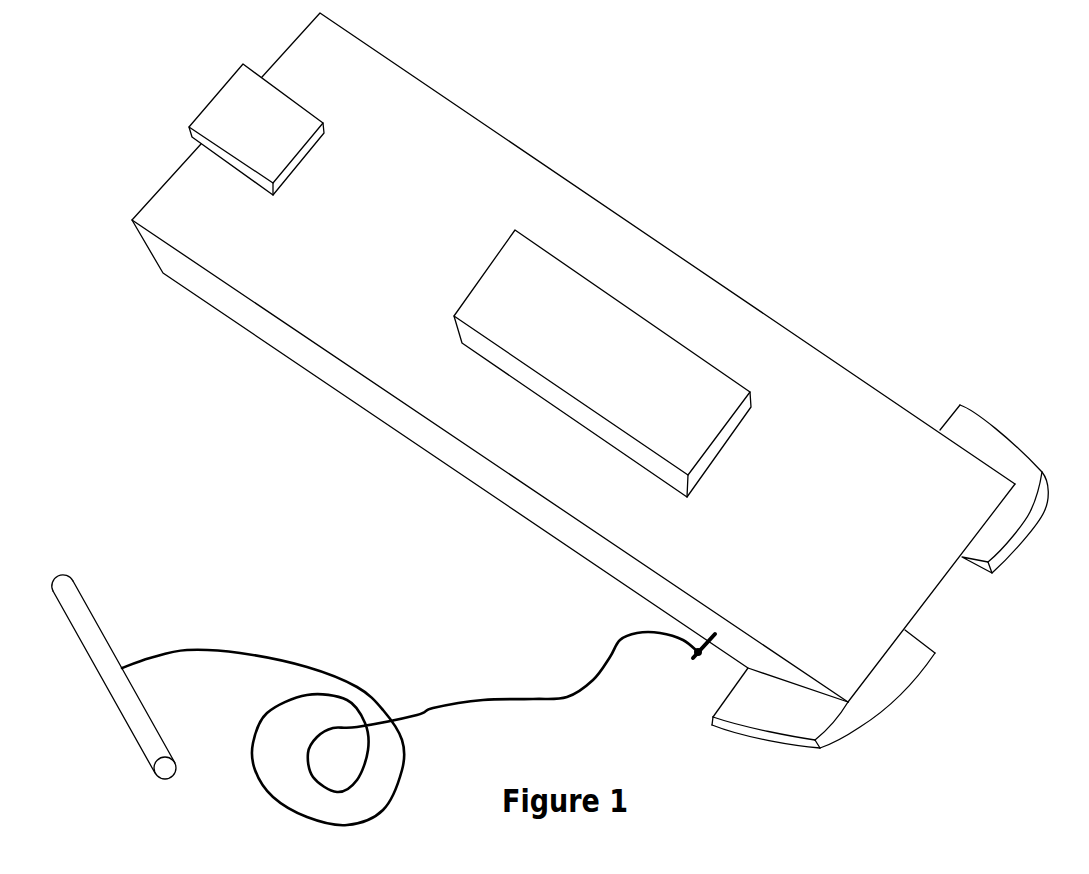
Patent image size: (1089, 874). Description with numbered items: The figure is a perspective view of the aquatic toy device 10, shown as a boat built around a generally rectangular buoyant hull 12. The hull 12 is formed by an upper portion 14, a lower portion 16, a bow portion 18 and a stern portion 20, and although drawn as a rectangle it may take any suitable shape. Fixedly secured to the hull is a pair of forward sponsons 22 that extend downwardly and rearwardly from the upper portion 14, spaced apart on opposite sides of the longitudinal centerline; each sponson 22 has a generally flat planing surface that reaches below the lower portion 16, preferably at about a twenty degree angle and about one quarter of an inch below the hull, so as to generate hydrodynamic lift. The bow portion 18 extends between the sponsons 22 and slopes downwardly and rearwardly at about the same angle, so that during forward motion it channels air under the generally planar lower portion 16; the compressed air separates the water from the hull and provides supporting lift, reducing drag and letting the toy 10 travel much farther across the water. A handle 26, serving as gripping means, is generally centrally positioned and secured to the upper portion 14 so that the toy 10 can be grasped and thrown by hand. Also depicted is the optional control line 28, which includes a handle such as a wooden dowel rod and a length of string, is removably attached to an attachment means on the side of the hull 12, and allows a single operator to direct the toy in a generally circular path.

The aquatic toy device 10 is at (782, 95).
The buoyant hull 12 is at (440, 95).
The upper portion 14 is at (520, 187).
The lower portion 16 is at (470, 485).
The bow portion 18 is at (937, 593).
The stern portion 20 is at (282, 55).
The forward sponsons 22 is at (987, 417).
The handle 26 is at (627, 333).
The control line 28 is at (102, 625).